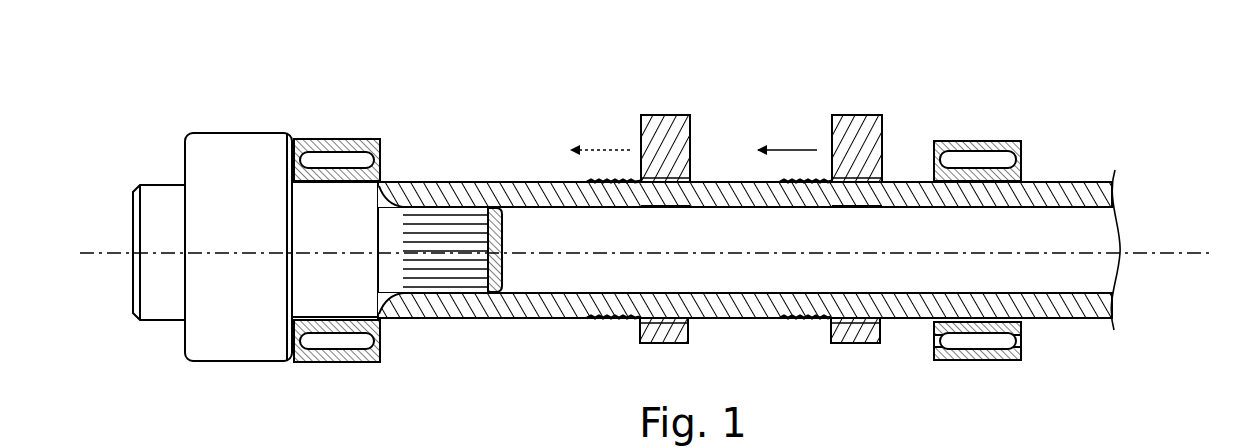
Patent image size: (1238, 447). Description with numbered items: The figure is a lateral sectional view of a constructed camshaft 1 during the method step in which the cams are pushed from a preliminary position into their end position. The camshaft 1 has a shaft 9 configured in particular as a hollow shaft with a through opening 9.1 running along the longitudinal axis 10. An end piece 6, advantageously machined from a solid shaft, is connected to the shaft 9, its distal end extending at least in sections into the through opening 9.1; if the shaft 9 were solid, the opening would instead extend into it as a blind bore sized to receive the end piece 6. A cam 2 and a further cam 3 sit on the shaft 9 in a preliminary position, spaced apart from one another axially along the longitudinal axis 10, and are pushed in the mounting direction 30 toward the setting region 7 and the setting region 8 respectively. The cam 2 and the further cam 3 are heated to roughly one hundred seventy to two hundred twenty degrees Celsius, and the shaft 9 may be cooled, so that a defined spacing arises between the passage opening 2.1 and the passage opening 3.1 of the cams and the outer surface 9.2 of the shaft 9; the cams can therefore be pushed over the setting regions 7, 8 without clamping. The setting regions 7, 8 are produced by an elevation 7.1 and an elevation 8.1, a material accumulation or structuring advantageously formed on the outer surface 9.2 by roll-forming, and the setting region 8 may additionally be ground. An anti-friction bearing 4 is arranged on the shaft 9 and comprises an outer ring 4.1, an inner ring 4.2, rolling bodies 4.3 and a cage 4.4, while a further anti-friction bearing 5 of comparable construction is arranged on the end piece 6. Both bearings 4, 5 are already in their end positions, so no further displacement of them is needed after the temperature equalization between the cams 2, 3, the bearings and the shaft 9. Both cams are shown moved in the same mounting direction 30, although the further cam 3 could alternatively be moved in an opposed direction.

The constructed camshaft 1 is at (452, 81).
The cam 2 is at (838, 114).
The passage opening 2.1 is at (870, 212).
The further cam 3 is at (665, 114).
The passage opening 3.1 is at (690, 212).
The anti-friction bearing 4 is at (950, 140).
The outer ring 4.1 is at (1022, 358).
The inner ring 4.2 is at (1022, 330).
The rolling bodies 4.3 is at (950, 352).
The cage 4.4 is at (934, 340).
The further anti-friction bearing 5 is at (325, 138).
The end piece 6 is at (240, 156).
The setting region 7 is at (830, 332).
The elevation 7.1 is at (786, 320).
The setting region 8 is at (630, 326).
The elevation 8.1 is at (590, 180).
The shaft 9 is at (465, 318).
The through opening 9.1 is at (1104, 277).
The outer surface 9.2 is at (495, 322).
The longitudinal axis 10 is at (1154, 252).
The mounting direction 30 is at (605, 150).